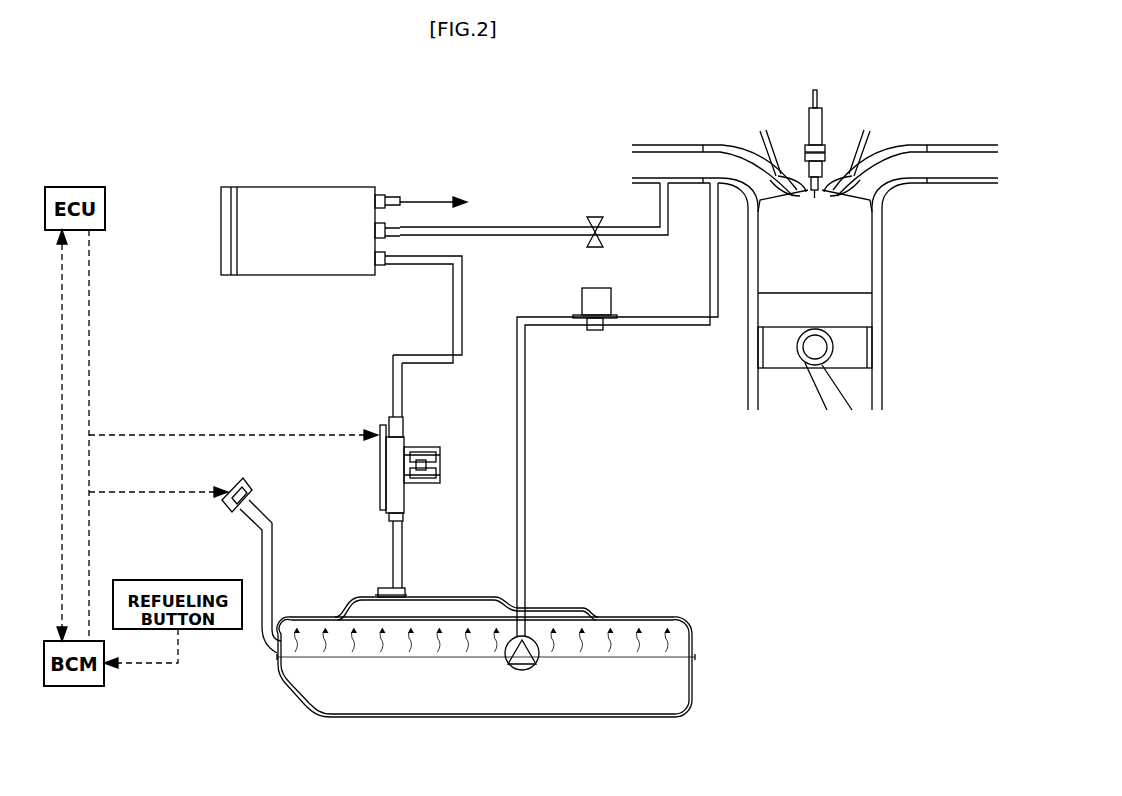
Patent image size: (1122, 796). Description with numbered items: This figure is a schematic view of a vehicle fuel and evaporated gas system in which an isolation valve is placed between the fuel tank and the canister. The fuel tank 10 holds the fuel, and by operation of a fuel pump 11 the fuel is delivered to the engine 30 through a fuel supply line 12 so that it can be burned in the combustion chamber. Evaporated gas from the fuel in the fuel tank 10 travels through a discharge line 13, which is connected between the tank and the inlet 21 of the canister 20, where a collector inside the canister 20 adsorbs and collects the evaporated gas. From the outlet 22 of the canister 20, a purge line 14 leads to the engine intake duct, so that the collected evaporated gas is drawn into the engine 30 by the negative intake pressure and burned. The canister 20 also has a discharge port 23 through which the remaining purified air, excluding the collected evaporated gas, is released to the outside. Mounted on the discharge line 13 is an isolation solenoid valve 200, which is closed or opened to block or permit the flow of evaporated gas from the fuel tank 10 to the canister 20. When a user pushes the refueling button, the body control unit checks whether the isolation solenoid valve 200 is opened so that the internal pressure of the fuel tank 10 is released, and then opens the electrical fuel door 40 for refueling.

The fuel tank 10 is at (541, 717).
The fuel pump 11 is at (512, 663).
The fuel supply line 12 is at (526, 497).
The discharge line 13 is at (402, 392).
The purge line 14 is at (520, 227).
The canister 20 is at (289, 190).
The inlet 21 is at (390, 264).
The outlet 22 is at (393, 230).
The discharge port 23 is at (392, 197).
The engine 30 is at (752, 385).
The electrical fuel door 40 is at (248, 482).
The isolation solenoid valve 200 is at (432, 496).